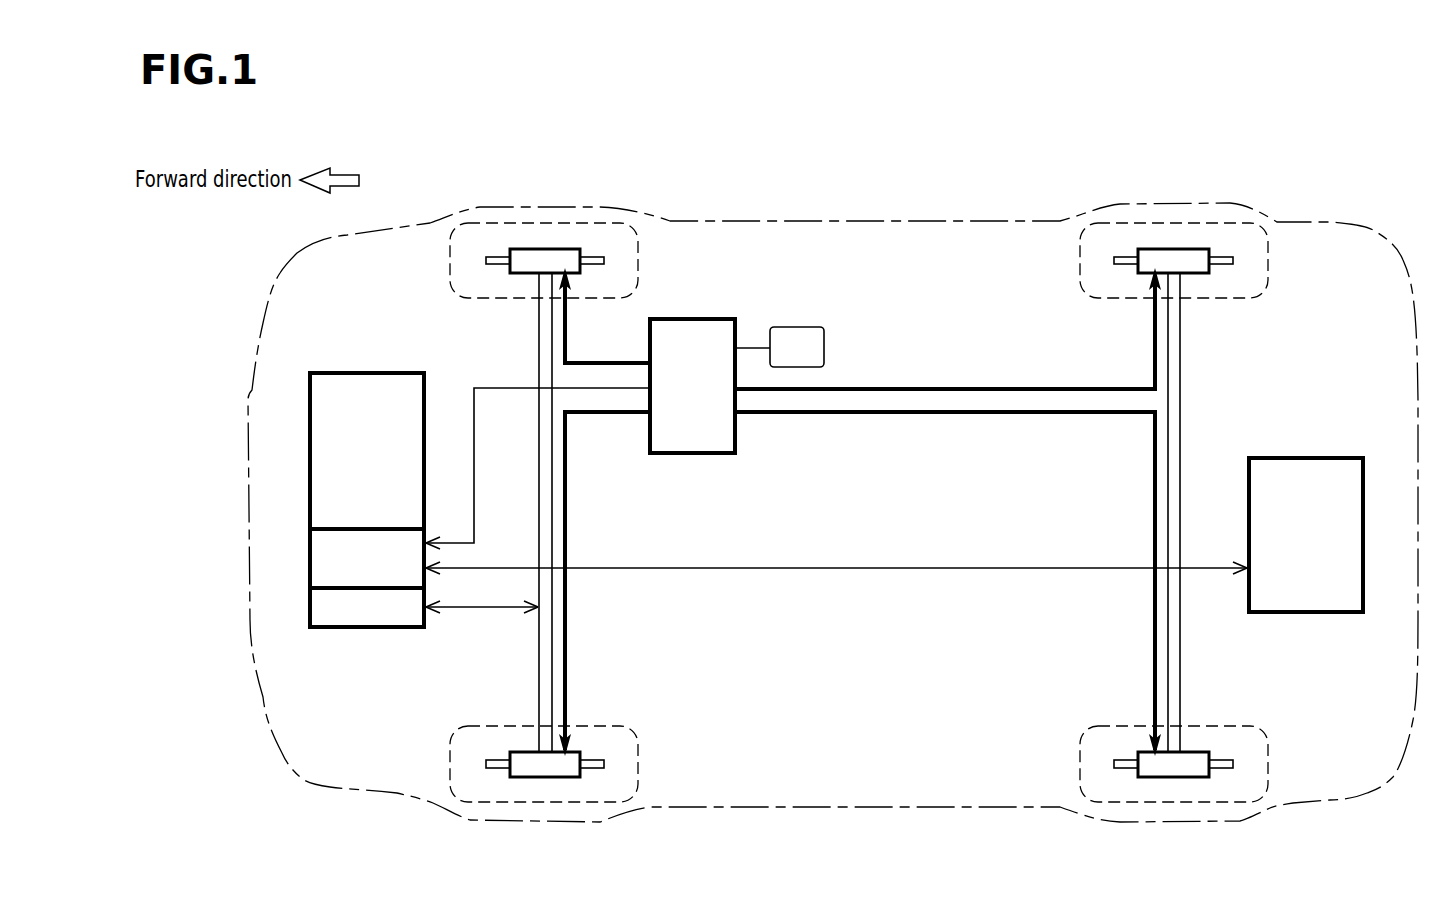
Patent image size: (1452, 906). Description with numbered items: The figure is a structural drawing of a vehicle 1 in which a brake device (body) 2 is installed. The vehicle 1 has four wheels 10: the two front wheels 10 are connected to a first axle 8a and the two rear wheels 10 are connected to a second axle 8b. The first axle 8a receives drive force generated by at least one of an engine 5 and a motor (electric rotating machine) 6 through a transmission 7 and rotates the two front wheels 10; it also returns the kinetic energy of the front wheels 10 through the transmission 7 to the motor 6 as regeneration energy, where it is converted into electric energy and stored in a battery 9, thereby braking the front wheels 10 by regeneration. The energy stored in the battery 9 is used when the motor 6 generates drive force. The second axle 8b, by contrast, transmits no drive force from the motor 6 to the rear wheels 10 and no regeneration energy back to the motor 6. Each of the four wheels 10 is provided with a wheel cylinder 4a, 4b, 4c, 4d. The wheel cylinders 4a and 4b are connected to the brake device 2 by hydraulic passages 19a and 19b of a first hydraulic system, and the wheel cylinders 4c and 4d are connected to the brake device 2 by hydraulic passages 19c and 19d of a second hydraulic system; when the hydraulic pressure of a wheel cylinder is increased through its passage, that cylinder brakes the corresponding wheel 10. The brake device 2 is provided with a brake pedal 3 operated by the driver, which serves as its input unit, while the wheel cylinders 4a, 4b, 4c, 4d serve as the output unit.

The vehicle 1 is at (1140, 130).
The brake device (body) 2 is at (697, 319).
The brake pedal 3 is at (824, 348).
The wheel cylinder 4a is at (522, 270).
The wheel cylinder 4b is at (522, 757).
The wheel cylinder 4c is at (1193, 270).
The wheel cylinder 4d is at (1193, 757).
The engine 5 is at (310, 446).
The motor (electric rotating machine) 6 is at (310, 556).
The transmission 7 is at (310, 606).
The axle (first axle) 8a is at (538, 672).
The axle (second axle) 8b is at (1181, 672).
The battery 9 is at (1306, 458).
The wheels 10 is at (516, 222).
The hydraulic passage (first hydraulic system) 19a is at (565, 340).
The hydraulic passage (first hydraulic system) 19b is at (565, 650).
The hydraulic passage (second hydraulic system) 19c is at (1155, 340).
The hydraulic passage (second hydraulic system) 19d is at (1155, 650).